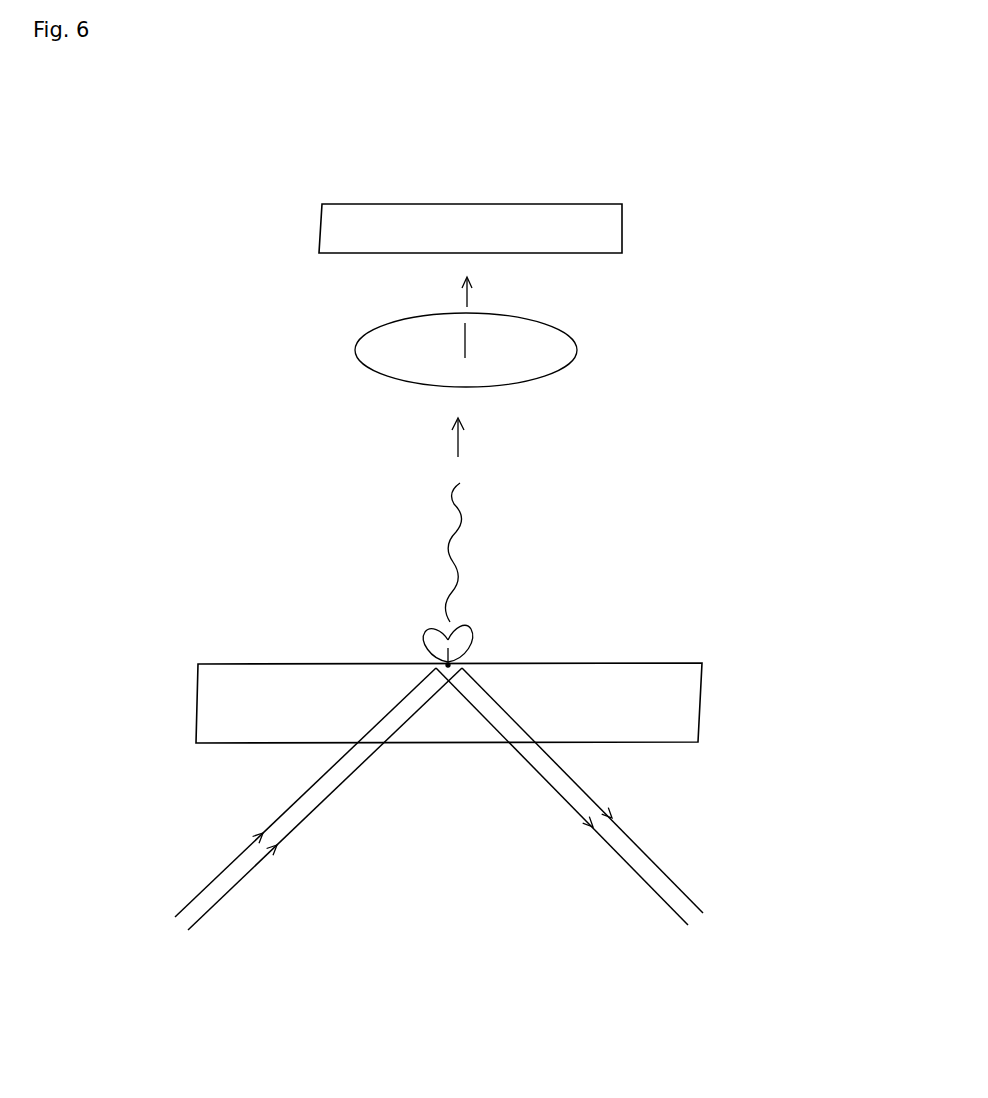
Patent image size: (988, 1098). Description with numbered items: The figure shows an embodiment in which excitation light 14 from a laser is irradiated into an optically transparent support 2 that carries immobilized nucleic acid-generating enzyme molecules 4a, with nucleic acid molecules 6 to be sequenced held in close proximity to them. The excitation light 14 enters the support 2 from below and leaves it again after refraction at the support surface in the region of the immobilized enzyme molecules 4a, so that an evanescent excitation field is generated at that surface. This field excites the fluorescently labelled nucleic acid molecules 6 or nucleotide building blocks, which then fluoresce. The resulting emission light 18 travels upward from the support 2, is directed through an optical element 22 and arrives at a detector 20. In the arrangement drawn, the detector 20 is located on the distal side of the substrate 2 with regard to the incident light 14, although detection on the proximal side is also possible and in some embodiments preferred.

The optically transparent support 2 is at (713, 687).
The nucleic acid-generating enzyme molecules 4a is at (413, 643).
The nucleic acid molecules 6 is at (473, 512).
The excitation light 14 is at (270, 875).
The emission light 18 is at (476, 437).
The detector 20 is at (628, 223).
The optical element 22 is at (628, 348).